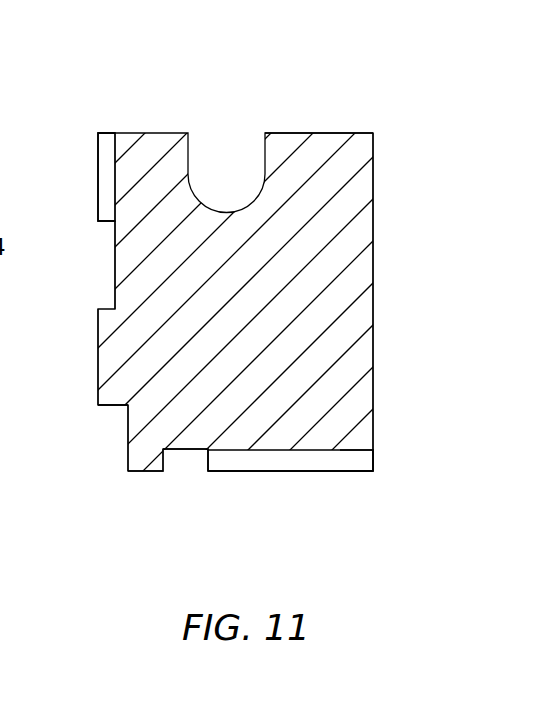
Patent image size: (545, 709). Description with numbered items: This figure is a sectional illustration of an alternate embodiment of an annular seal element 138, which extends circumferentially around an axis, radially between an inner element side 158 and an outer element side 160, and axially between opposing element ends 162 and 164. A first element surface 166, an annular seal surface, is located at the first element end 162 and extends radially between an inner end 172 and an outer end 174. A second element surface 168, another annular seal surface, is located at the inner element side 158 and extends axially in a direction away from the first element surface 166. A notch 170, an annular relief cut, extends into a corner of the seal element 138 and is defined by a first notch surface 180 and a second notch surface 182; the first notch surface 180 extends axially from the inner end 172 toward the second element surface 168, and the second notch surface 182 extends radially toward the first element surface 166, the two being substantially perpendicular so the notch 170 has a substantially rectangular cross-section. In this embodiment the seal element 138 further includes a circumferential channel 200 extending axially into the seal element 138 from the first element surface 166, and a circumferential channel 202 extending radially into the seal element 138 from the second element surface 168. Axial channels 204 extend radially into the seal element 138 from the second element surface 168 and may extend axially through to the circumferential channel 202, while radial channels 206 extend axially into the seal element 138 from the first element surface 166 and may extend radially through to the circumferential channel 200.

The seal element 138 is at (246, 94).
The inner element side 158 is at (341, 472).
The outer element side 160 is at (327, 133).
The first element end 162 is at (98, 186).
The second element end 164 is at (373, 306).
The first element surface 166 is at (98, 362).
The second element surface 168 is at (243, 472).
The notch 170 is at (104, 461).
The inner end 172 is at (99, 406).
The outer end 174 is at (98, 132).
The first notch surface 180 is at (107, 407).
The second notch surface 182 is at (128, 464).
The circumferential channel 200 is at (96, 268).
The circumferential channel 202 is at (186, 470).
The axial channel 204 is at (364, 461).
The radial channel 206 is at (108, 142).